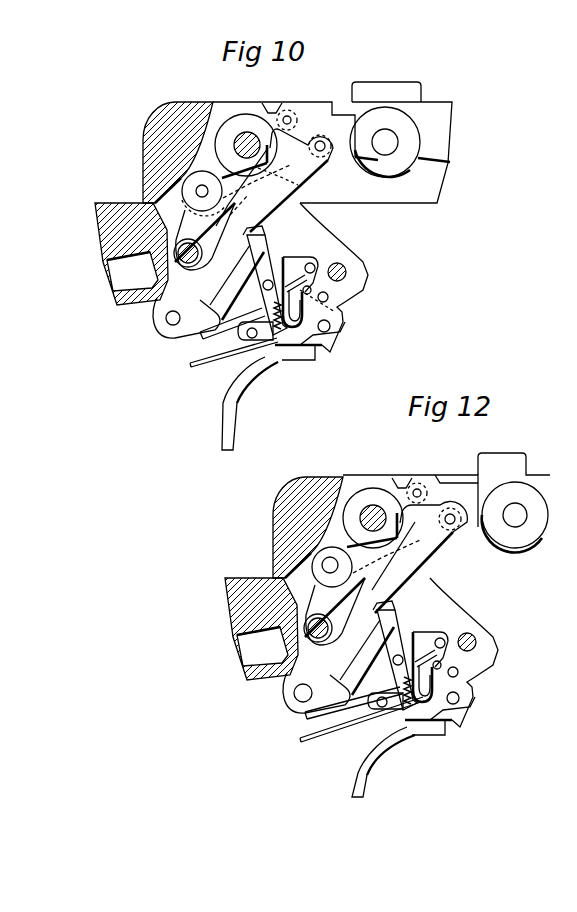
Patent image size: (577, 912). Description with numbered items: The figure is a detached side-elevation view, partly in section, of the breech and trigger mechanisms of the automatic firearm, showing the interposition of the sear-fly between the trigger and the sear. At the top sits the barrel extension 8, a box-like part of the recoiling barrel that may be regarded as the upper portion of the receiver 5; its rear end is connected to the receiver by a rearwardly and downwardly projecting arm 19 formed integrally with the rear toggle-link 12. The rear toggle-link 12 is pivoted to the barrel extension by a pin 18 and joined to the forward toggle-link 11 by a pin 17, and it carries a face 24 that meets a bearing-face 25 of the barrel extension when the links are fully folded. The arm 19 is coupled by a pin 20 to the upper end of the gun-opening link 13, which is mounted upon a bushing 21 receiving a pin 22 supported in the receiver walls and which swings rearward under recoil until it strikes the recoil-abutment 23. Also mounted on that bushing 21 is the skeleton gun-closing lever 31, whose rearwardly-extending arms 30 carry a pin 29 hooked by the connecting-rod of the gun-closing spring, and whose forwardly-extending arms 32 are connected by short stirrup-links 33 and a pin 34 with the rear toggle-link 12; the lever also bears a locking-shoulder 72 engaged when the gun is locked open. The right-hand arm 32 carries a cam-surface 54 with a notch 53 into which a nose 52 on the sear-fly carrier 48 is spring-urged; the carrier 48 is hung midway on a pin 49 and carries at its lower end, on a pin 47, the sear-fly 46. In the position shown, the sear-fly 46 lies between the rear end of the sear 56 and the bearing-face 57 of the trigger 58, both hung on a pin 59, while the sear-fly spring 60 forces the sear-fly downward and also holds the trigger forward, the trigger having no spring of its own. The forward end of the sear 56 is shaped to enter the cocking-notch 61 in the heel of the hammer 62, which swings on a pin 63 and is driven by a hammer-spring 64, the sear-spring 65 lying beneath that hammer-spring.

In FIG. 10, the receiver 5 is at (117, 303).
In FIG. 12, the receiver 5 is at (252, 692).
In FIG. 10, the barrel extension 8 is at (146, 147).
In FIG. 12, the barrel extension 8 is at (301, 527).
In FIG. 10, the forward toggle-link 11 is at (376, 142).
In FIG. 10, the rear toggle-link 12 is at (328, 102).
In FIG. 12, the rear toggle-link 12 is at (446, 487).
In FIG. 10, the gun-opening link 13 is at (145, 237).
In FIG. 12, the gun-opening link 13 is at (332, 565).
In FIG. 10, the pin 17 is at (386, 142).
In FIG. 12, the pin 17 is at (525, 517).
In FIG. 10, the pin 18 is at (247, 134).
In FIG. 12, the pin 18 is at (373, 516).
In FIG. 12, the arm 19 is at (360, 530).
In FIG. 10, the pin 20 is at (202, 186).
In FIG. 10, the bushing 21 is at (194, 252).
In FIG. 12, the bushing 21 is at (335, 611).
In FIG. 10, the pin 22 is at (188, 268).
In FIG. 12, the pin 22 is at (318, 642).
In FIG. 10, the recoil-abutment 23 is at (107, 262).
In FIG. 12, the recoil-abutment 23 is at (242, 629).
In FIG. 10, the face 24 is at (278, 103).
In FIG. 12, the face 24 is at (402, 468).
In FIG. 10, the bearing-face 25 is at (214, 102).
In FIG. 12, the bearing-face 25 is at (353, 464).
In FIG. 12, the pin 29 is at (283, 705).
In FIG. 10, the rearwardly-extending arms 30 is at (162, 300).
In FIG. 12, the rearwardly-extending arms 30 is at (310, 693).
In FIG. 10, the gun-closing lever 31 is at (256, 192).
In FIG. 12, the gun-closing lever 31 is at (384, 591).
In FIG. 10, the forwardly-extending arms 32 is at (304, 173).
In FIG. 12, the forwardly-extending arms 32 is at (426, 557).
In FIG. 10, the stirrup-links 33 is at (305, 140).
In FIG. 12, the stirrup-links 33 is at (449, 509).
In FIG. 10, the pin 34 is at (288, 116).
In FIG. 12, the pin 34 is at (424, 475).
In FIG. 10, the sear-fly 46 is at (277, 348).
In FIG. 12, the sear-fly 46 is at (372, 734).
In FIG. 10, the pin 47 is at (245, 336).
In FIG. 12, the pin 47 is at (373, 709).
In FIG. 10, the sear-fly carrier 48 is at (280, 256).
In FIG. 12, the sear-fly carrier 48 is at (431, 653).
In FIG. 10, the pin 49 is at (268, 280).
In FIG. 12, the pin 49 is at (397, 660).
In FIG. 10, the nose 52 is at (262, 235).
In FIG. 12, the nose 52 is at (401, 598).
In FIG. 10, the notch 53 is at (245, 237).
In FIG. 12, the notch 53 is at (406, 623).
In FIG. 10, the cam-surface 54 is at (237, 282).
In FIG. 12, the cam-surface 54 is at (367, 657).
In FIG. 10, the sear 56 is at (296, 340).
In FIG. 12, the sear 56 is at (488, 701).
In FIG. 10, the bearing-face 57 is at (287, 348).
In FIG. 12, the bearing-face 57 is at (415, 739).
In FIG. 10, the trigger 58 is at (237, 418).
In FIG. 12, the trigger 58 is at (383, 762).
In FIG. 10, the pin 59 is at (331, 326).
In FIG. 12, the pin 59 is at (472, 716).
In FIG. 10, the sear-fly spring 60 is at (266, 311).
In FIG. 12, the sear-fly spring 60 is at (391, 687).
In FIG. 10, the cocking-notch 61 is at (356, 292).
In FIG. 12, the cocking-notch 61 is at (507, 658).
In FIG. 10, the hammer 62 is at (338, 250).
In FIG. 12, the hammer 62 is at (452, 656).
In FIG. 10, the pin 63 is at (346, 268).
In FIG. 12, the pin 63 is at (491, 635).
In FIG. 10, the hammer-spring 64 is at (200, 338).
In FIG. 12, the hammer-spring 64 is at (343, 707).
In FIG. 10, the sear-spring 65 is at (190, 365).
In FIG. 12, the sear-spring 65 is at (362, 728).
In FIG. 10, the locking-shoulder 72 is at (213, 305).
In FIG. 12, the locking-shoulder 72 is at (359, 670).